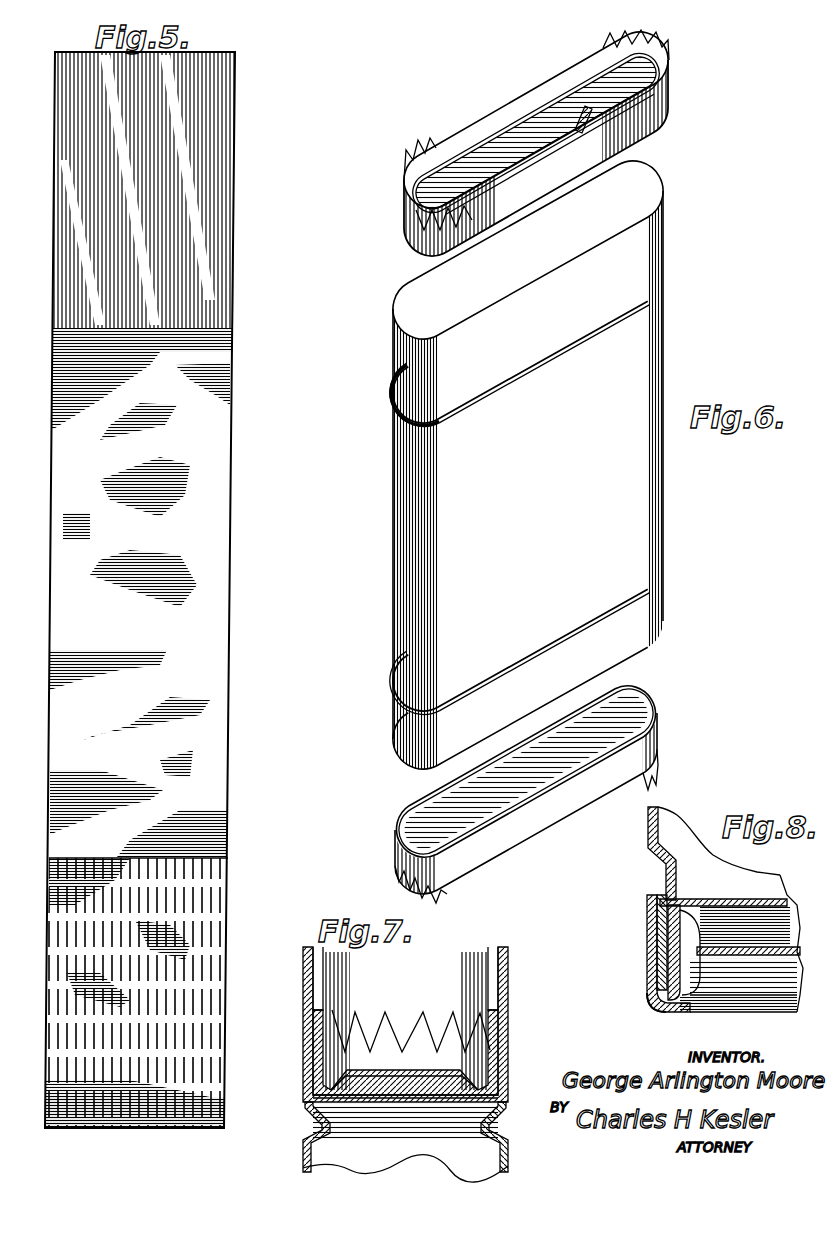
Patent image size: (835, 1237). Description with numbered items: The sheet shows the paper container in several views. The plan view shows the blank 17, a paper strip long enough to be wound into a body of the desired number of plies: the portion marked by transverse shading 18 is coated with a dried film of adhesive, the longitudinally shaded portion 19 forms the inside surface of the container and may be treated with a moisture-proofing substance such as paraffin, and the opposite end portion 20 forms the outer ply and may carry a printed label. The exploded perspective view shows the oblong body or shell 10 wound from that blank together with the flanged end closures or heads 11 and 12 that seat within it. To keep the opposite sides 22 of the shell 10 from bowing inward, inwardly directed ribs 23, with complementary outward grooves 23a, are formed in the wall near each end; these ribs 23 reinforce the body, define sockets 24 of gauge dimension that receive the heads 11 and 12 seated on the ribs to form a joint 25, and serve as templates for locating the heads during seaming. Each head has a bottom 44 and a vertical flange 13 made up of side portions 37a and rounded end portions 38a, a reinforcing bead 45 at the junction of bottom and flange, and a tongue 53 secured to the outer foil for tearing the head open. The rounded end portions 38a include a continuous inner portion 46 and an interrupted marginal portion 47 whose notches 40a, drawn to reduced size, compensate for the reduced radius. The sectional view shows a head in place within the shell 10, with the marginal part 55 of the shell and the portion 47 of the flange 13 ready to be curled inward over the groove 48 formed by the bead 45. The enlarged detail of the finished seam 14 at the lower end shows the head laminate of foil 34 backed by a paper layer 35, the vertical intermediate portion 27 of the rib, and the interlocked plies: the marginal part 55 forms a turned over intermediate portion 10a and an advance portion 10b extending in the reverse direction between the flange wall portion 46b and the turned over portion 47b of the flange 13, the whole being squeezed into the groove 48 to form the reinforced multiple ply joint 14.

In FIG. 6, the body or shell 10 is at (652, 475).
In FIG. 7, the body or shell 10 is at (504, 1150).
In FIG. 8, the body or shell 10 is at (647, 830).
In FIG. 8, the turned over intermediate portion 10a is at (743, 975).
In FIG. 8, the advance portion 10b is at (655, 955).
In FIG. 6, the flanged end closure or head 11 is at (524, 790).
In FIG. 6, the flanged end closure or head 12 is at (536, 468).
In FIG. 6, the flange 13 is at (580, 76).
In FIG. 7, the flange 13 is at (508, 1057).
In FIG. 8, the multiple ply joint or seam 14 is at (660, 1010).
In FIG. 5, the blank 17 is at (218, 752).
In FIG. 5, the adhesive-coated portion 18 is at (212, 368).
In FIG. 5, the inside surface portion 19 is at (215, 95).
In FIG. 5, the outer end portion 20 is at (205, 938).
In FIG. 6, the opposite sides 22 is at (640, 372).
In FIG. 6, the inwardly directed beads or ribs 23 is at (663, 290).
In FIG. 7, the inwardly directed beads or ribs 23 is at (482, 1110).
In FIG. 6, the outward grooves 23a is at (408, 414).
In FIG. 8, the outward grooves 23a is at (664, 877).
In FIG. 6, the sockets 24 is at (630, 195).
In FIG. 7, the sockets 24 is at (499, 950).
In FIG. 8, the joint 25 is at (670, 892).
In FIG. 8, the vertical intermediate portion 27 is at (712, 920).
In FIG. 8, the layer of foil 34 is at (776, 958).
In FIG. 8, the paper layer 35 is at (762, 950).
In FIG. 6, the side portions 37a is at (455, 172).
In FIG. 6, the round end portions 38a is at (670, 85).
In FIG. 7, the notches 40a is at (402, 1020).
In FIG. 6, the bottom 44 is at (437, 808).
In FIG. 6, the reinforcement or bead 45 is at (400, 824).
In FIG. 7, the reinforcement or bead 45 is at (468, 1102).
In FIG. 6, the continuous inner portion 46 is at (430, 250).
In FIG. 8, the flange wall portion 46b is at (652, 928).
In FIG. 6, the interrupted marginal portion 47 is at (408, 208).
In FIG. 7, the interrupted marginal portion 47 is at (505, 1026).
In FIG. 8, the turned over portion 47b is at (700, 1000).
In FIG. 8, the recess or groove 48 is at (682, 906).
In FIG. 6, the tongue 53 is at (635, 95).
In FIG. 7, the marginal part 55 is at (506, 990).